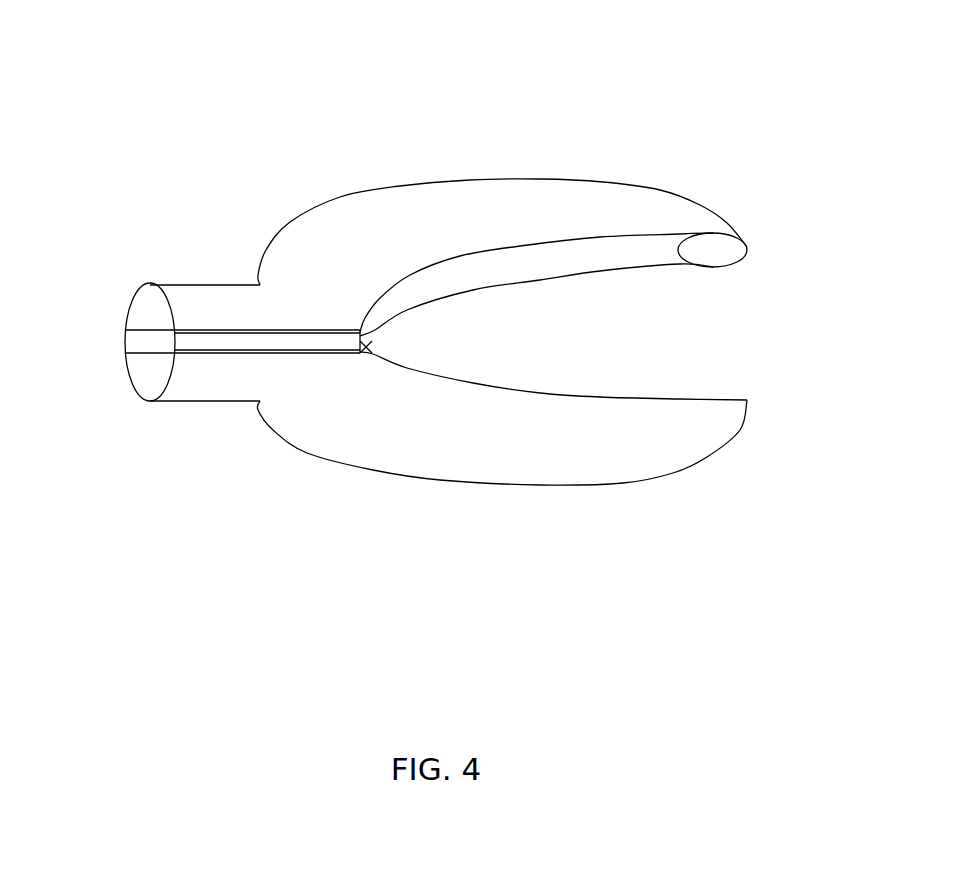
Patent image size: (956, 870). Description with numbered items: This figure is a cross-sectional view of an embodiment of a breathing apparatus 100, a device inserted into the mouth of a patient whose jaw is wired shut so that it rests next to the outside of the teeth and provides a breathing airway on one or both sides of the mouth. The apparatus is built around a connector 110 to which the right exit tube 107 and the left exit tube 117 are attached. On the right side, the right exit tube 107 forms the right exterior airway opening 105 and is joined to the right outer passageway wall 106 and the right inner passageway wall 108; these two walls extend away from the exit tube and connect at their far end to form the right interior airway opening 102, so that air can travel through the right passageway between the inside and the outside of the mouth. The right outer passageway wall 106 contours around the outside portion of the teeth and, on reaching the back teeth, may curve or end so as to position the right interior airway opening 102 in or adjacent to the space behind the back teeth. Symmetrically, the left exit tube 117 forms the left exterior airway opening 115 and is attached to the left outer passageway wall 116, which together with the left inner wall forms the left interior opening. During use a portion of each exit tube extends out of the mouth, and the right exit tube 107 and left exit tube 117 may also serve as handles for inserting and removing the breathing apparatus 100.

The breathing apparatus 100 is at (328, 80).
The right interior airway opening 102 is at (713, 250).
The right exterior airway opening 105 is at (158, 317).
The right outer passageway wall 106 is at (428, 200).
The right exit tube 107 is at (177, 283).
The right inner passageway wall 108 is at (613, 250).
The connector 110 is at (210, 342).
The left exterior airway opening 115 is at (142, 367).
The left outer passageway wall 116 is at (678, 433).
The left exit tube 117 is at (192, 403).